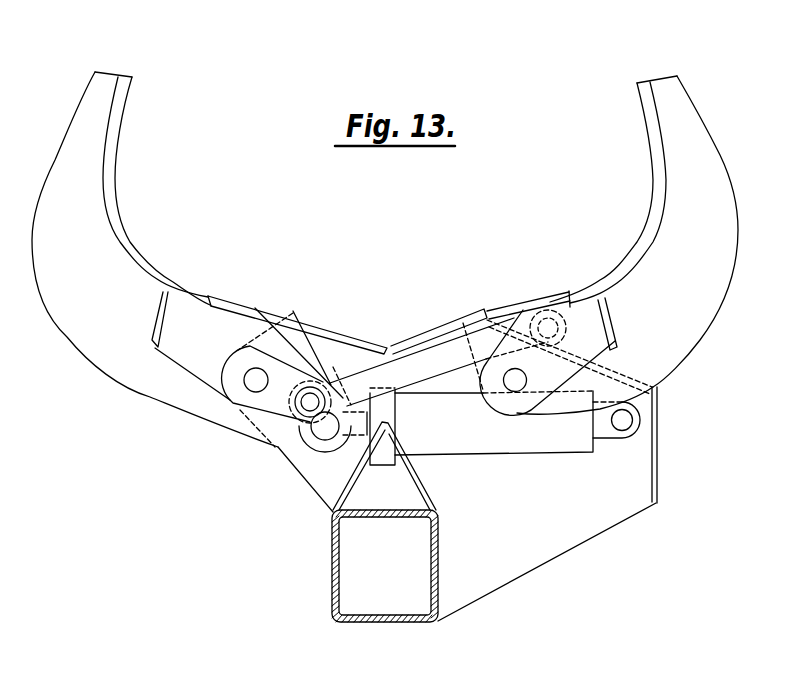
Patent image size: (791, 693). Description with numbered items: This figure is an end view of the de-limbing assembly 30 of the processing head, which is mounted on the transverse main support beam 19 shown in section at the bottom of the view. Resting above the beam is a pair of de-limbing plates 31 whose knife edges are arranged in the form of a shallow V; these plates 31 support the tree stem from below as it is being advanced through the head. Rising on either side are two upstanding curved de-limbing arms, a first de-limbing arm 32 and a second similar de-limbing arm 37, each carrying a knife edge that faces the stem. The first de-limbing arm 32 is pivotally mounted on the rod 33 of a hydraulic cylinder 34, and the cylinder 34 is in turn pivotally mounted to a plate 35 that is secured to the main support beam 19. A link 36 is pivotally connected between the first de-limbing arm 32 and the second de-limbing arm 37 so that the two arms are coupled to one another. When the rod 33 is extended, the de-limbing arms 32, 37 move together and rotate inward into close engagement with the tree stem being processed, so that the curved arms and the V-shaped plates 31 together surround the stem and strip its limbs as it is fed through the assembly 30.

The transverse support beam 19 is at (332, 588).
The de-limbing assembly 30 is at (675, 418).
The de-limbing plates 31 is at (352, 330).
The first de-limbing arm 32 is at (667, 367).
The rod 33 is at (285, 445).
The hydraulic cylinder 34 is at (517, 442).
The plate 35 is at (580, 534).
The link 36 is at (447, 357).
The second de-limbing arm 37 is at (140, 250).